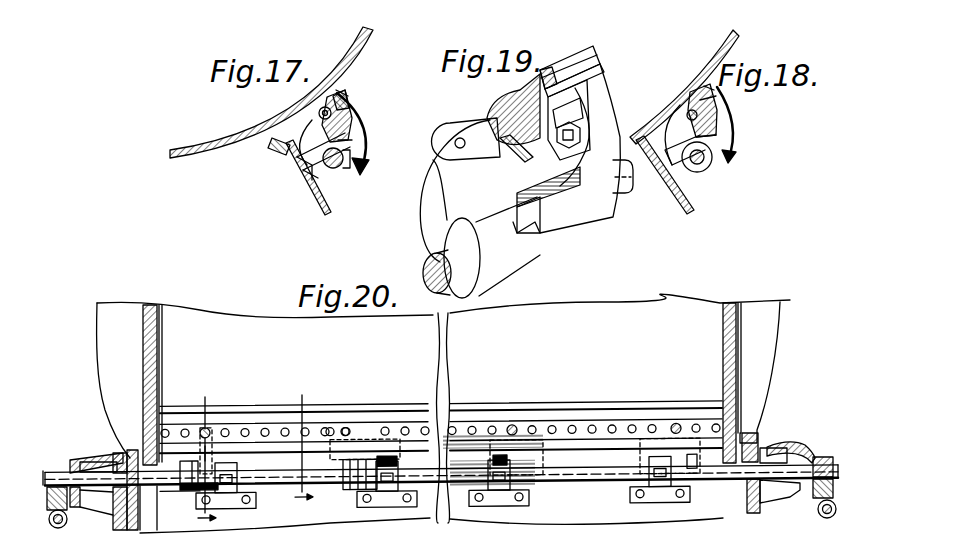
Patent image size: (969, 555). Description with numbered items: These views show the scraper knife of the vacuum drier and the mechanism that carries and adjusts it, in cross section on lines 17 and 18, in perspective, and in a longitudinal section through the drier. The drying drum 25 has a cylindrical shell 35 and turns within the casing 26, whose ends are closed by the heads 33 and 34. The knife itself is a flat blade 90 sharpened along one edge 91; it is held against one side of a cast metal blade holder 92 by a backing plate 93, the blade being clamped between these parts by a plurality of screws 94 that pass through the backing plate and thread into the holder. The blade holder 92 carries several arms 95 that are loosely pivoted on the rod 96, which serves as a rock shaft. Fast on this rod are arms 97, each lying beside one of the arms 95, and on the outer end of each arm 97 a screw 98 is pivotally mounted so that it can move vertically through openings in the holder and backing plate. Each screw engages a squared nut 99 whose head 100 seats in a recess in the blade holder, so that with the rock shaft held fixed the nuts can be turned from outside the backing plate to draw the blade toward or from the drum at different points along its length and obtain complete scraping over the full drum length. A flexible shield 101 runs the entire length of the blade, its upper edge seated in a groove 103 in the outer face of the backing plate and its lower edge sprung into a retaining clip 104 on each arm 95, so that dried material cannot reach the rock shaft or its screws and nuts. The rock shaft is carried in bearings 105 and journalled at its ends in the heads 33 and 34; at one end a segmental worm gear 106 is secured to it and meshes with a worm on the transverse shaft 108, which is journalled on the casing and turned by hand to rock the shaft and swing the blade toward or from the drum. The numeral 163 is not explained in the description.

In FIG. 20, the section line 17— 17 is at (204, 467).
In FIG. 20, the section line 18— 18 is at (303, 452).
In FIG. 17, the drying drum 25 is at (167, 151).
In FIG. 18, the drying drum 25 is at (734, 31).
In FIG. 20, the drying drum 25 is at (661, 302).
In FIG. 20, the casing 26 is at (751, 303).
In FIG. 20, the head 33 is at (148, 305).
In FIG. 20, the head 34 is at (783, 306).
In FIG. 17, the cylindrical shell 35 is at (373, 29).
In FIG. 18, the cylindrical shell 35 is at (731, 31).
In FIG. 20, the cylindrical shell 35 is at (443, 314).
In FIG. 17, the blade 90 is at (346, 94).
In FIG. 19, the blade 90 is at (597, 57).
In FIG. 18, the blade 90 is at (707, 88).
In FIG. 20, the blade 90 is at (560, 406).
In FIG. 19, the sharpened edge 91 is at (580, 50).
In FIG. 20, the sharpened edge 91 is at (632, 405).
In FIG. 17, the blade holder 92 is at (352, 133).
In FIG. 19, the blade holder 92 is at (512, 96).
In FIG. 18, the blade holder 92 is at (710, 137).
In FIG. 20, the blade holder 92 is at (271, 454).
In FIG. 17, the backing plate 93 is at (349, 104).
In FIG. 19, the backing plate 93 is at (567, 113).
In FIG. 18, the backing plate 93 is at (708, 122).
In FIG. 20, the backing plate 93 is at (398, 426).
In FIG. 19, the screws 94 is at (580, 137).
In FIG. 18, the screws 94 is at (710, 113).
In FIG. 20, the screws 94 is at (346, 428).
In FIG. 17, the arms 95 is at (322, 131).
In FIG. 19, the arms 95 is at (530, 200).
In FIG. 20, the arms 95 is at (345, 458).
In FIG. 17, the rod 96 is at (343, 163).
In FIG. 19, the rod 96 is at (625, 193).
In FIG. 18, the rod 96 is at (720, 162).
In FIG. 20, the rod 96 is at (570, 485).
In FIG. 17, the arms 97 is at (300, 152).
In FIG. 19, the arms 97 is at (421, 222).
In FIG. 18, the arms 97 is at (700, 172).
In FIG. 20, the arms 97 is at (205, 495).
In FIG. 17, the screw 98 is at (321, 110).
In FIG. 19, the screw 98 is at (476, 136).
In FIG. 18, the screw 98 is at (685, 113).
In FIG. 20, the screw 98 is at (677, 427).
In FIG. 17, the nut 99 is at (352, 120).
In FIG. 19, the nut 99 is at (533, 158).
In FIG. 18, the nut 99 is at (726, 125).
In FIG. 20, the nut 99 is at (513, 427).
In FIG. 17, the head 100 is at (306, 142).
In FIG. 19, the head 100 is at (487, 167).
In FIG. 18, the head 100 is at (672, 135).
In FIG. 17, the shield 101 is at (352, 148).
In FIG. 19, the shield 101 is at (608, 105).
In FIG. 19, the groove 103 is at (603, 88).
In FIG. 20, the groove 103 is at (250, 422).
In FIG. 19, the retaining clip 104 is at (527, 253).
In FIG. 18, the retaining clip 104 is at (717, 148).
In FIG. 20, the retaining clip 104 is at (372, 490).
In FIG. 17, the bearings 105 is at (327, 177).
In FIG. 18, the bearings 105 is at (683, 177).
In FIG. 20, the segmental worm gear 106 is at (823, 441).
In FIG. 20, the transverse shaft 108 is at (823, 513).
In FIG. 20, the frame member 163 is at (477, 547).